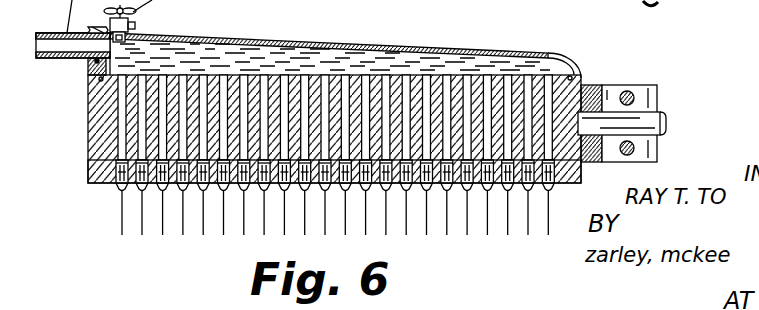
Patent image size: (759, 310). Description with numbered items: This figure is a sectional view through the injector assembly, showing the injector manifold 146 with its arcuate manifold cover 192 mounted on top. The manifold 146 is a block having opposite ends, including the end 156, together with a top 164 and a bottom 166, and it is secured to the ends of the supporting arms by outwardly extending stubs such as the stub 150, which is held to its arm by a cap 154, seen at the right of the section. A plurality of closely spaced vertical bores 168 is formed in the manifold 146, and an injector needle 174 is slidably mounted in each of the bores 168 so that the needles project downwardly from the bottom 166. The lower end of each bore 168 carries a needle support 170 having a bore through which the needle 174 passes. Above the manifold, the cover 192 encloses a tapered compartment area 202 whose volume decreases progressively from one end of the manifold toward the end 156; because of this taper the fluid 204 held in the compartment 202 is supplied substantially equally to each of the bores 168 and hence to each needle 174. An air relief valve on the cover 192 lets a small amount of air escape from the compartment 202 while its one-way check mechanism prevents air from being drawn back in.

The injector manifold 146 is at (574, 98).
The outwardly extending stub 150 is at (600, 93).
The cap 154 is at (648, 97).
The manifold end 156 is at (566, 150).
The manifold top 164 is at (520, 75).
The manifold bottom 166 is at (518, 188).
The vertical bores 168 is at (427, 76).
The needle support 170 is at (117, 184).
The injector needle 174 is at (118, 224).
The arcuate manifold cover 192 is at (317, 43).
The tapered compartment area 202 is at (393, 60).
The fluid 204 is at (230, 53).